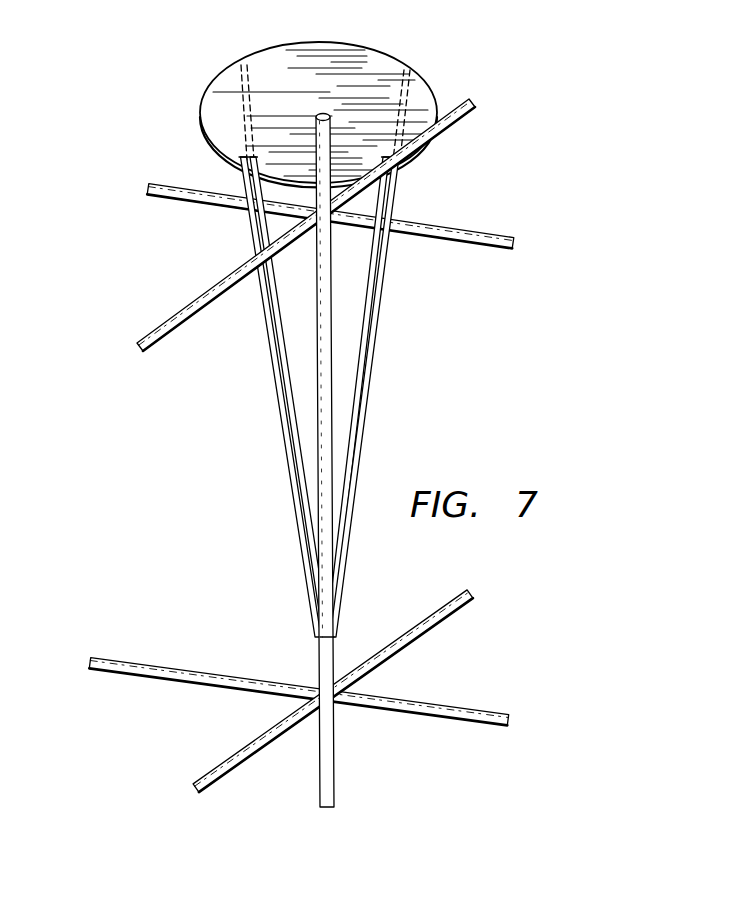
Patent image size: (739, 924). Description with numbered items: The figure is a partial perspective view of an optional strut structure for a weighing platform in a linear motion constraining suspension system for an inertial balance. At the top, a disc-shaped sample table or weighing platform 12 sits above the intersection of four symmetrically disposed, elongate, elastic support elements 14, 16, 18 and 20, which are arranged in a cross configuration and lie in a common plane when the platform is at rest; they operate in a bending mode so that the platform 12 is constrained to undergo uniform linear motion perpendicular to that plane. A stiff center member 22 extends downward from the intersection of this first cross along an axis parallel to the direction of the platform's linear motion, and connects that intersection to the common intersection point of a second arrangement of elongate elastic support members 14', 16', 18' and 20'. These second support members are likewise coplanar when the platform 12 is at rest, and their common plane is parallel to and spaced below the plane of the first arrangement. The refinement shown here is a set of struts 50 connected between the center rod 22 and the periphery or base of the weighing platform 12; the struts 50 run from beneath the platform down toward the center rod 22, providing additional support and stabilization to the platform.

The weighing platform 12 is at (372, 78).
The elastic support element 14 is at (415, 159).
The elastic support element 16 is at (427, 215).
The elastic support element 18 is at (306, 225).
The elastic support element 20 is at (328, 185).
The stiff center member 22 is at (246, 183).
The strut 50 is at (257, 242).
The elongate elastic support member 14' is at (418, 644).
The elongate elastic support member 16' is at (419, 692).
The elongate elastic support member 18' is at (322, 691).
The elongate elastic support member 20' is at (298, 667).